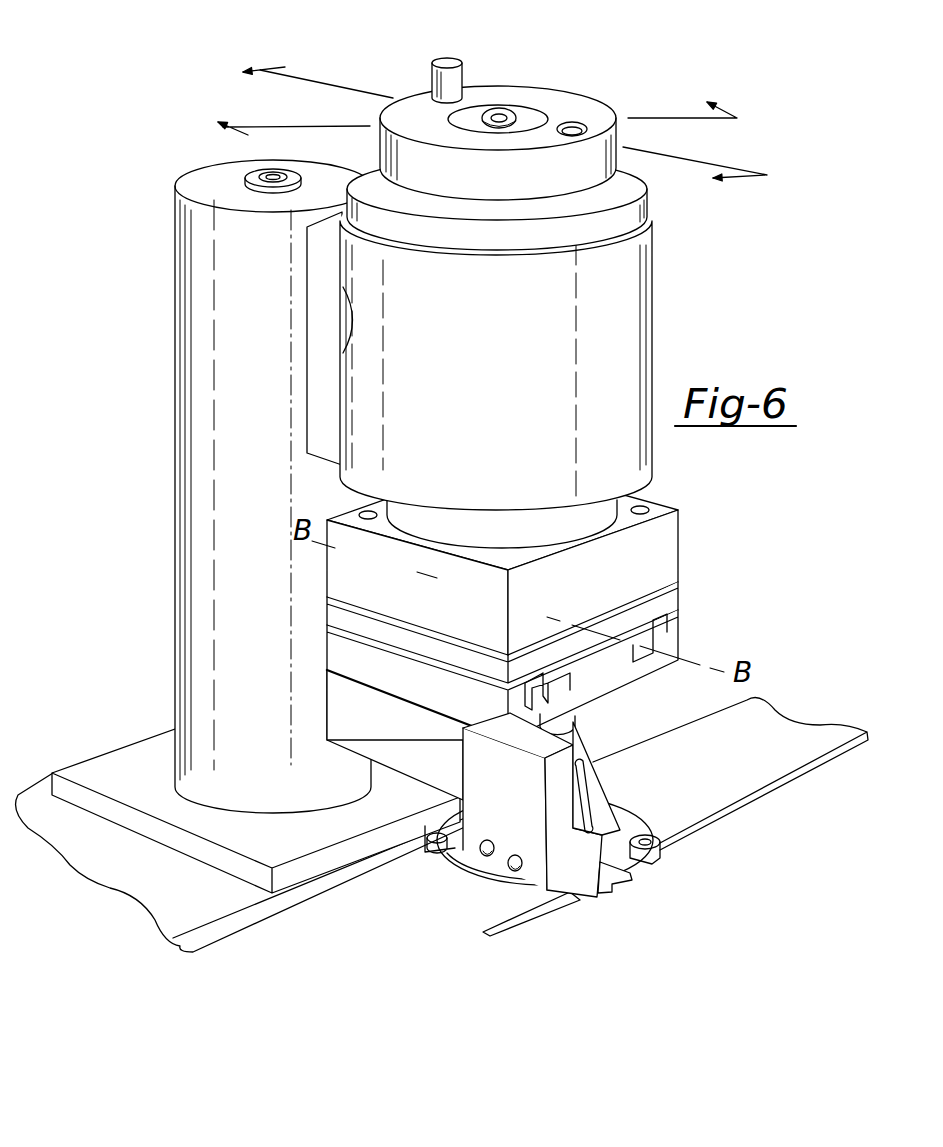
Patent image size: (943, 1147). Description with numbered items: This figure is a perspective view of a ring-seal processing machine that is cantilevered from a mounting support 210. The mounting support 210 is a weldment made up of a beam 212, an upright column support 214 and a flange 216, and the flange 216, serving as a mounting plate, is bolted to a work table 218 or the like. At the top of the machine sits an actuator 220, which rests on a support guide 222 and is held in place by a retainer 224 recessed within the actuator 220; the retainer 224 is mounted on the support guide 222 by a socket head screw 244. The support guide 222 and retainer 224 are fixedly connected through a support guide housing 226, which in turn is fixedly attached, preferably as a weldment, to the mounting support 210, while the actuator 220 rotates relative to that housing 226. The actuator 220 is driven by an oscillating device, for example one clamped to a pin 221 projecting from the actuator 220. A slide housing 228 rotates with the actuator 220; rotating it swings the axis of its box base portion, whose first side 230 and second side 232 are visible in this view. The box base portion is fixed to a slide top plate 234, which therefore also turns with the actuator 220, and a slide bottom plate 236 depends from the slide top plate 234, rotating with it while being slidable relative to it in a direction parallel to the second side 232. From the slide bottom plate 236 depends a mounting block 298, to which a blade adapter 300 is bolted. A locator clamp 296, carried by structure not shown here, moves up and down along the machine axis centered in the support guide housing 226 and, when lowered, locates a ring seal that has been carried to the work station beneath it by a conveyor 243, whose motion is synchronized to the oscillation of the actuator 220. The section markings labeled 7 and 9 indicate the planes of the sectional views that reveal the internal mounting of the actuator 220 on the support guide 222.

The mounting support 210 is at (145, 217).
The beam 212 is at (317, 387).
The column support 214 is at (181, 510).
The flange 216 is at (113, 760).
The work table 218 is at (174, 918).
The actuator 220 is at (560, 92).
The pin 221 is at (448, 56).
The support guide 222 is at (653, 199).
The retainer 224 is at (590, 104).
The support guide housing 226 is at (660, 318).
The slide housing 228 is at (652, 492).
The first side 230 is at (668, 550).
The second side 232 is at (340, 580).
The slide top plate 234 is at (688, 592).
The slide bottom plate 236 is at (680, 642).
The conveyor 243 is at (768, 778).
The socket head screw 244 is at (499, 113).
The locator clamp 296 is at (610, 793).
The mounting block 298 is at (337, 735).
The blade adapter 300 is at (595, 897).
The section line 7 is at (466, 103).
The section line 9 is at (511, 109).